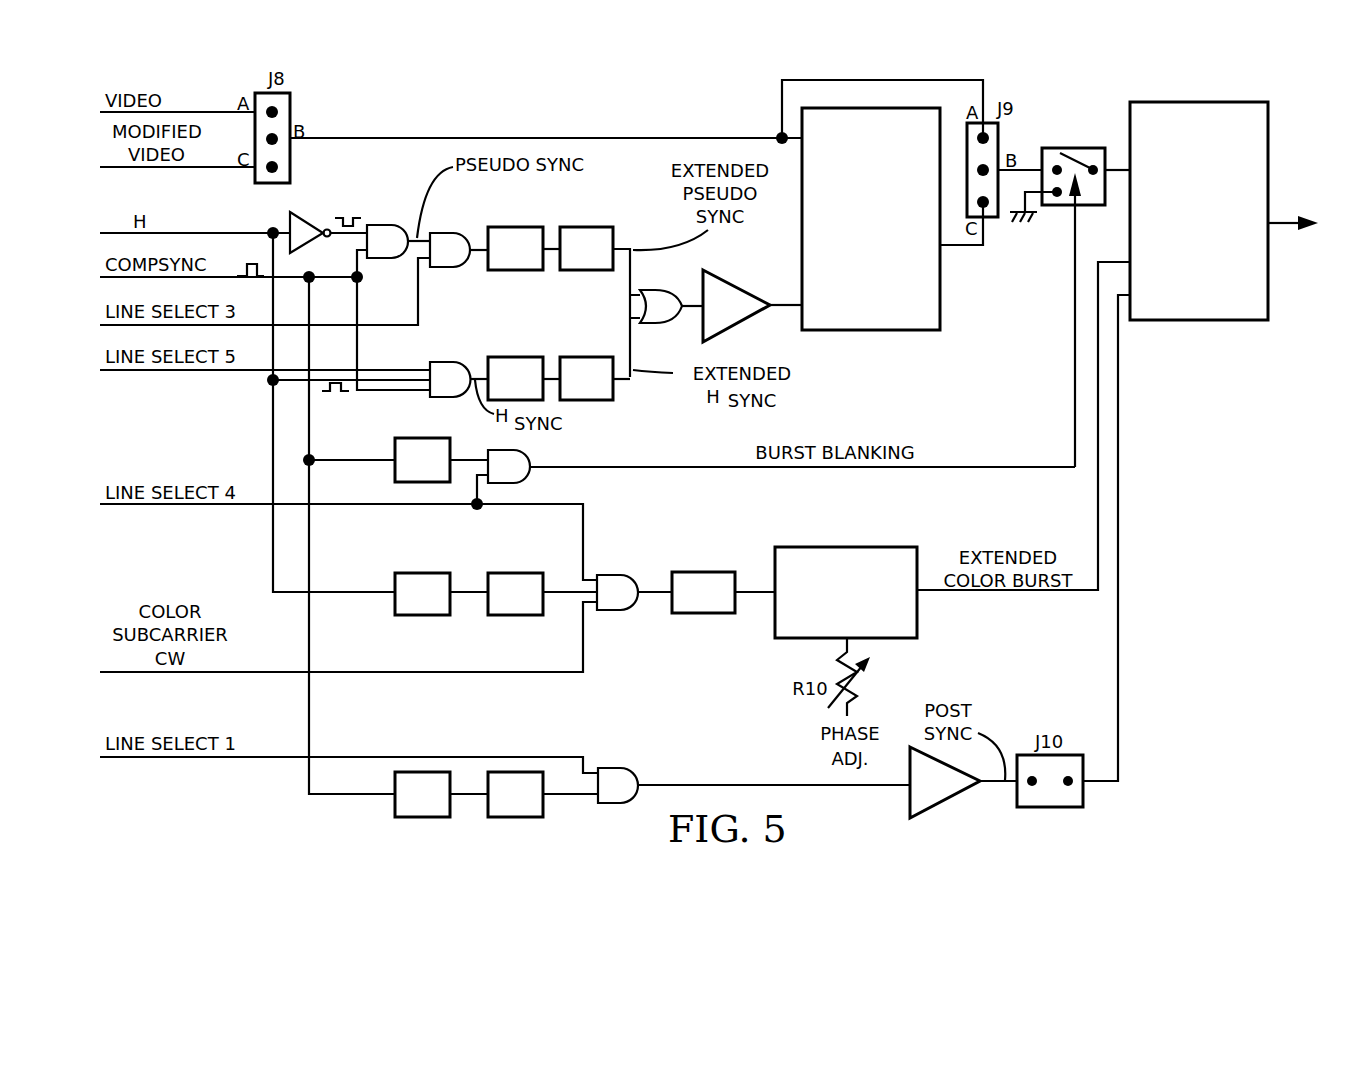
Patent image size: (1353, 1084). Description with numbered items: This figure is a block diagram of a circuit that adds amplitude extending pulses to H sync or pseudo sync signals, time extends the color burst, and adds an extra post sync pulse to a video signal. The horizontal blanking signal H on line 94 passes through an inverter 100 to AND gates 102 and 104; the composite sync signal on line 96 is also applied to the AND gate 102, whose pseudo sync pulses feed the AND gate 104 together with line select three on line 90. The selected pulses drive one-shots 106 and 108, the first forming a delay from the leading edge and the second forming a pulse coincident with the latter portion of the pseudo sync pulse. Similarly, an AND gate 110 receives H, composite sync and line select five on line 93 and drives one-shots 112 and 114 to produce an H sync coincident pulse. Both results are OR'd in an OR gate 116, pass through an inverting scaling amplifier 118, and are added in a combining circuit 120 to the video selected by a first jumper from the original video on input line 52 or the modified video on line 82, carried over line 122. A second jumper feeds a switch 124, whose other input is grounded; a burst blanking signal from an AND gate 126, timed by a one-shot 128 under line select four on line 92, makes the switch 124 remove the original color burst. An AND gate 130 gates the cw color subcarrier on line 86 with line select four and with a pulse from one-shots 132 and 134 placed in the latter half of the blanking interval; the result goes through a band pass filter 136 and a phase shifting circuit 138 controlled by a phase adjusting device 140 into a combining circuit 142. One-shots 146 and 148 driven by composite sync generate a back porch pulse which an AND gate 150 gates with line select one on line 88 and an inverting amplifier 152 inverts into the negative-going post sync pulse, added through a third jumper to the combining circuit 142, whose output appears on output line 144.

The input line 52 is at (189, 112).
The modified video signal line 82 is at (220, 168).
The H rate signal output line 94 is at (190, 233).
The composite sync signal output line 96 is at (253, 279).
The line select 3 output line 90 is at (253, 326).
The line select 5 output line 93 is at (253, 372).
The line select 4 output line 92 is at (255, 507).
The output line for regenerated cw color subcarrier 86 is at (268, 675).
The line select 1 output line 88 is at (268, 760).
The inverter 100 is at (293, 212).
The AND gate 102 is at (377, 225).
The AND gate 104 is at (447, 233).
The one-shot 106 is at (515, 227).
The one-shot 108 is at (592, 227).
The AND gate 110 is at (445, 362).
The one-shot 112 is at (513, 357).
The one-shot 114 is at (580, 357).
The OR gate 116 is at (647, 290).
The inverting scaling amplifier 118 is at (722, 280).
The combining circuit 120 is at (940, 270).
The line 122 is at (625, 137).
The switch 124 is at (1053, 148).
The AND gate 126 is at (530, 475).
The one-shot 128 is at (418, 438).
The AND gate 130 is at (612, 575).
The one-shot 132 is at (418, 573).
The one-shot 134 is at (515, 573).
The band pass filter 136 is at (700, 572).
The phase shifting circuit 138 is at (843, 547).
The phase adjusting device 140 is at (850, 697).
The combining circuit 142 is at (1180, 102).
The output line 144 is at (1280, 223).
The one-shot 146 is at (425, 817).
The one-shot 148 is at (515, 817).
The AND gate 150 is at (616, 768).
The inverting amplifier 152 is at (932, 806).